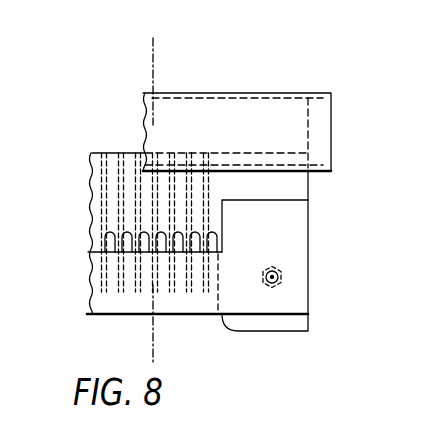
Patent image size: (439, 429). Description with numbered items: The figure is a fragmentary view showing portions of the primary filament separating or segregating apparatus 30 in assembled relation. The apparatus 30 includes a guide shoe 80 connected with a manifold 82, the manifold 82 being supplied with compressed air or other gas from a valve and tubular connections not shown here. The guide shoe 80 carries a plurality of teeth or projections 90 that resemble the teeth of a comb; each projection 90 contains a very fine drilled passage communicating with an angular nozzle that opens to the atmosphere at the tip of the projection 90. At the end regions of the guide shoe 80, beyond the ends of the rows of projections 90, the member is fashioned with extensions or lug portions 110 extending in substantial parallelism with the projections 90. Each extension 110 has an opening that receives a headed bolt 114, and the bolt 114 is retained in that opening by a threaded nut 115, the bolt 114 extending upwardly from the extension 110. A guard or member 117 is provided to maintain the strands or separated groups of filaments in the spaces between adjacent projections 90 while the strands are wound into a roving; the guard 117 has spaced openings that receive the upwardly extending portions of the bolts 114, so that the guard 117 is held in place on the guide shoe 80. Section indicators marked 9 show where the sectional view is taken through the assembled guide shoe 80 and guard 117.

The section line 9- 9 is at (147, 49).
The primary filament separating apparatus 30 is at (318, 90).
The manifold 82 is at (240, 92).
The guide shoe 80 is at (294, 180).
The projections 90 is at (150, 248).
The extensions 110 is at (263, 327).
The headed bolt 114 is at (280, 277).
The threaded nut 115 is at (284, 284).
The guard 117 is at (130, 300).